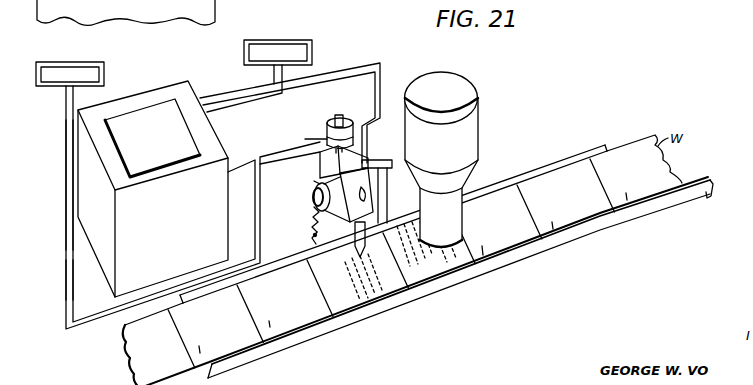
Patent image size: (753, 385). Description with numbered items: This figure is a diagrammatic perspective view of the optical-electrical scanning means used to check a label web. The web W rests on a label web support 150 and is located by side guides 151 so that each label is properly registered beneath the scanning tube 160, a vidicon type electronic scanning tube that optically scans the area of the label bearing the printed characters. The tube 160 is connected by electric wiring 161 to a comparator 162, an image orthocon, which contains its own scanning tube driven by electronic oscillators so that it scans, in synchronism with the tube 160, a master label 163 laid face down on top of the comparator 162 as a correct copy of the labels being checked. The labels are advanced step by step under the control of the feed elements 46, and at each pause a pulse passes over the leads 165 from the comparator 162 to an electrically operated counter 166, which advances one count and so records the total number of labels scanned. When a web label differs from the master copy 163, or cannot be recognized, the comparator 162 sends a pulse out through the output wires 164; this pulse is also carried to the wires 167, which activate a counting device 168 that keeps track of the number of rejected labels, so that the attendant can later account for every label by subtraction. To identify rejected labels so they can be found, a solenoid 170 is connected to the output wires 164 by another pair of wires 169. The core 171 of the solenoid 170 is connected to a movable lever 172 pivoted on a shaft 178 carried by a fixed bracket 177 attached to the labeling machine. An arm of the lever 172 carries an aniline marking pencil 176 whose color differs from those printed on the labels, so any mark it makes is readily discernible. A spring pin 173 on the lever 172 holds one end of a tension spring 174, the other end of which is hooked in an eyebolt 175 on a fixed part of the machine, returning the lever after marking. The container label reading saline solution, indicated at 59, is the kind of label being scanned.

The feed control elements 46 is at (481, 246).
The saline solution reservoir 59 is at (126, 14).
The label web support 150 is at (687, 173).
The side guides 151 is at (557, 160).
The scanning tube 160 is at (456, 152).
The electric wiring 161 is at (333, 72).
The comparator 162 is at (227, 158).
The master label 163 is at (165, 144).
The output wires 164 is at (93, 231).
The leads 165 is at (246, 91).
The counter 166 is at (292, 43).
The wires 167 is at (72, 294).
The counting device 168 is at (105, 78).
The pair of wires 169 is at (305, 139).
The solenoid 170 is at (333, 118).
The core 171 is at (339, 114).
The movable lever 172 is at (319, 214).
The spring pin 173 is at (322, 174).
The tension spring 174 is at (318, 212).
The eyebolt 175 is at (314, 235).
The aniline marking pencil 176 is at (389, 208).
The fixed bracket 177 is at (372, 152).
The shaft 178 is at (312, 197).